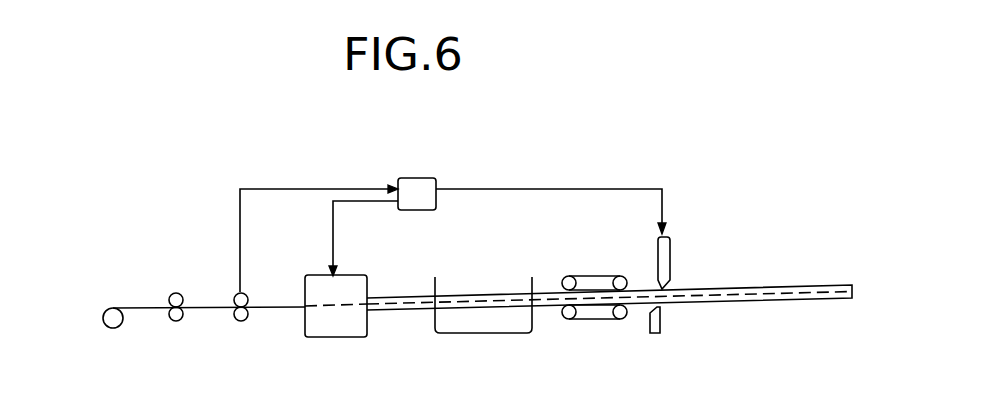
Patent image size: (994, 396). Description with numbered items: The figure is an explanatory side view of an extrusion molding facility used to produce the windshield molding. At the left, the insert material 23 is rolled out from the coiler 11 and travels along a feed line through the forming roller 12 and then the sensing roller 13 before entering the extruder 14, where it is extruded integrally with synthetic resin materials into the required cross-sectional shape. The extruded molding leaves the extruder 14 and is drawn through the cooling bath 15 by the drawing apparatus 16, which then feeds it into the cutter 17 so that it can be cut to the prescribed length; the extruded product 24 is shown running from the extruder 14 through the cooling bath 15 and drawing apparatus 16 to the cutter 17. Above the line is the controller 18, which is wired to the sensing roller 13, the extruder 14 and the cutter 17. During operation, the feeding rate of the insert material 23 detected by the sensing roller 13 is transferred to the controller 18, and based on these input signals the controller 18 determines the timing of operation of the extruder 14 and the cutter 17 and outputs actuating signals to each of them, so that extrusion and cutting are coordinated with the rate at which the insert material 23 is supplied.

The coiler 11 is at (113, 328).
The forming roller 12 is at (177, 322).
The sensing roller 13 is at (241, 322).
The extruder 14 is at (340, 337).
The cooling bath 15 is at (493, 333).
The drawing apparatus 16 is at (592, 319).
The cutter 17 is at (667, 270).
The controller 18 is at (424, 182).
The insert material 23 is at (145, 306).
The coated tube 24 is at (609, 297).